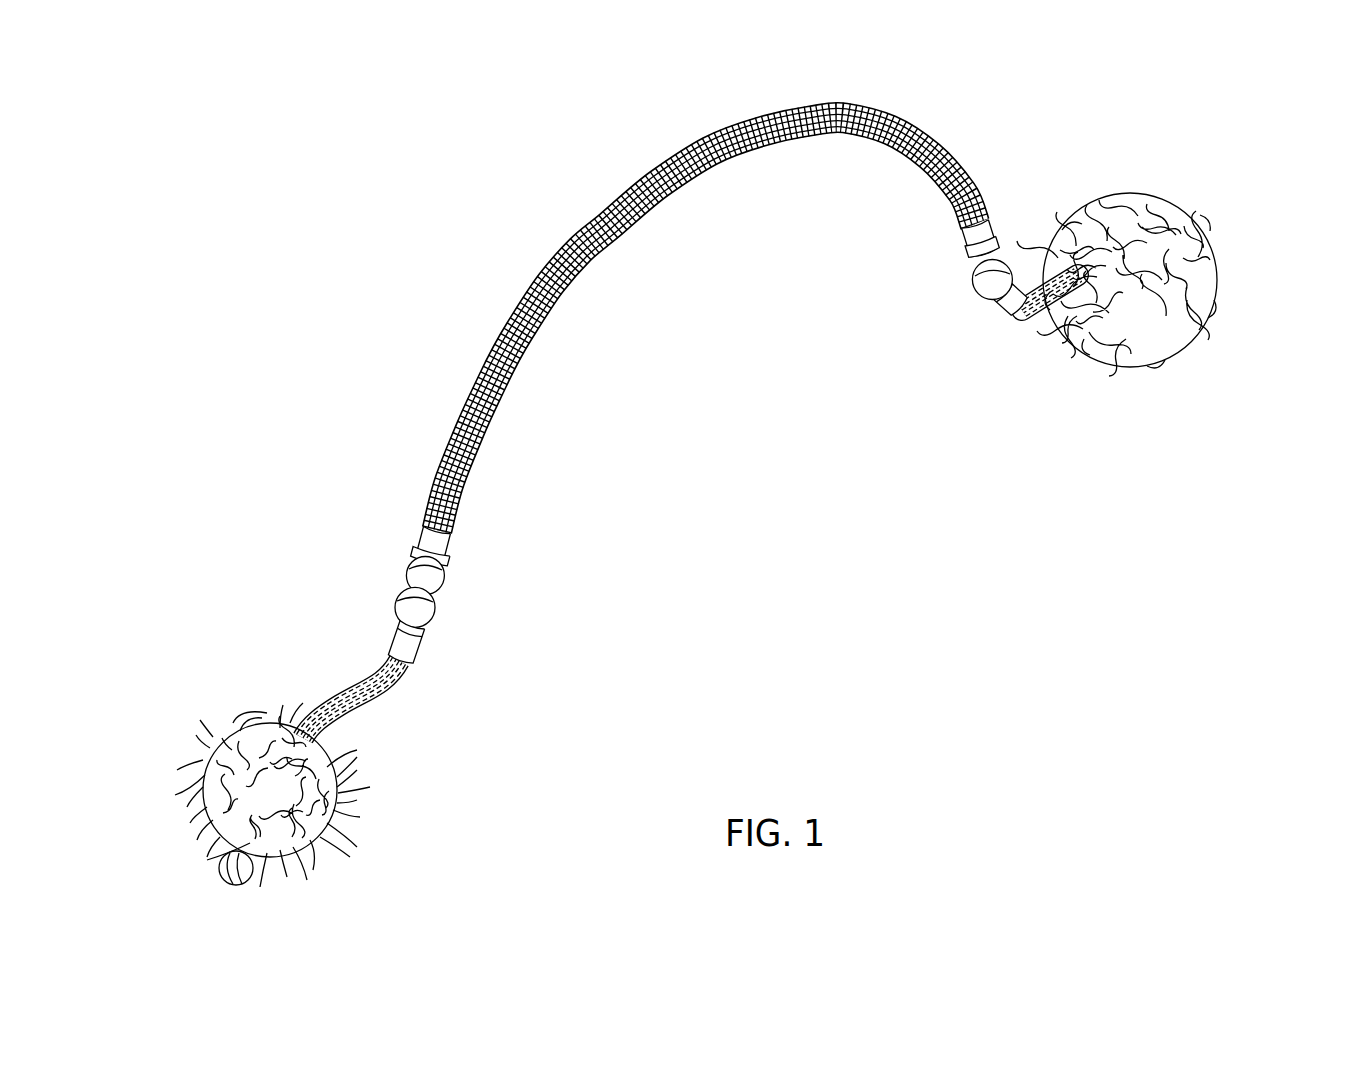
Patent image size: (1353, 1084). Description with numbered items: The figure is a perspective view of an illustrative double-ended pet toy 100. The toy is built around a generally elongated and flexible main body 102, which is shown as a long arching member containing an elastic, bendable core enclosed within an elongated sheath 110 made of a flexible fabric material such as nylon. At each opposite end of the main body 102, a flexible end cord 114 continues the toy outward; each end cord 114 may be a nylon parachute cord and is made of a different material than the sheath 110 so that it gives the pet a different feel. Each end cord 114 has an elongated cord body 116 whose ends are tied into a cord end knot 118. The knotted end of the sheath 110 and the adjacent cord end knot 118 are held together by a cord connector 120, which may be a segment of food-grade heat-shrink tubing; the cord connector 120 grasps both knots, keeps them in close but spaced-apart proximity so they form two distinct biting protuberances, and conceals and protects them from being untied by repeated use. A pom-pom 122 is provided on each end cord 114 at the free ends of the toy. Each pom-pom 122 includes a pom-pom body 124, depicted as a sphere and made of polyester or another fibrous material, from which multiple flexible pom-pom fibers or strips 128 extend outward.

The double-ended pet toy 100 is at (608, 132).
The main body 102 is at (501, 316).
The elongated sheath 110 is at (590, 236).
The flexible end cord 114 is at (329, 685).
The elongated cord body 116 is at (397, 688).
The cord end knot 118 is at (250, 875).
The cord connector 120 is at (416, 566).
The pom-pom 122 is at (199, 753).
The pom-pom body 124 is at (313, 825).
The pom-pom fibers or strips 128 is at (358, 797).